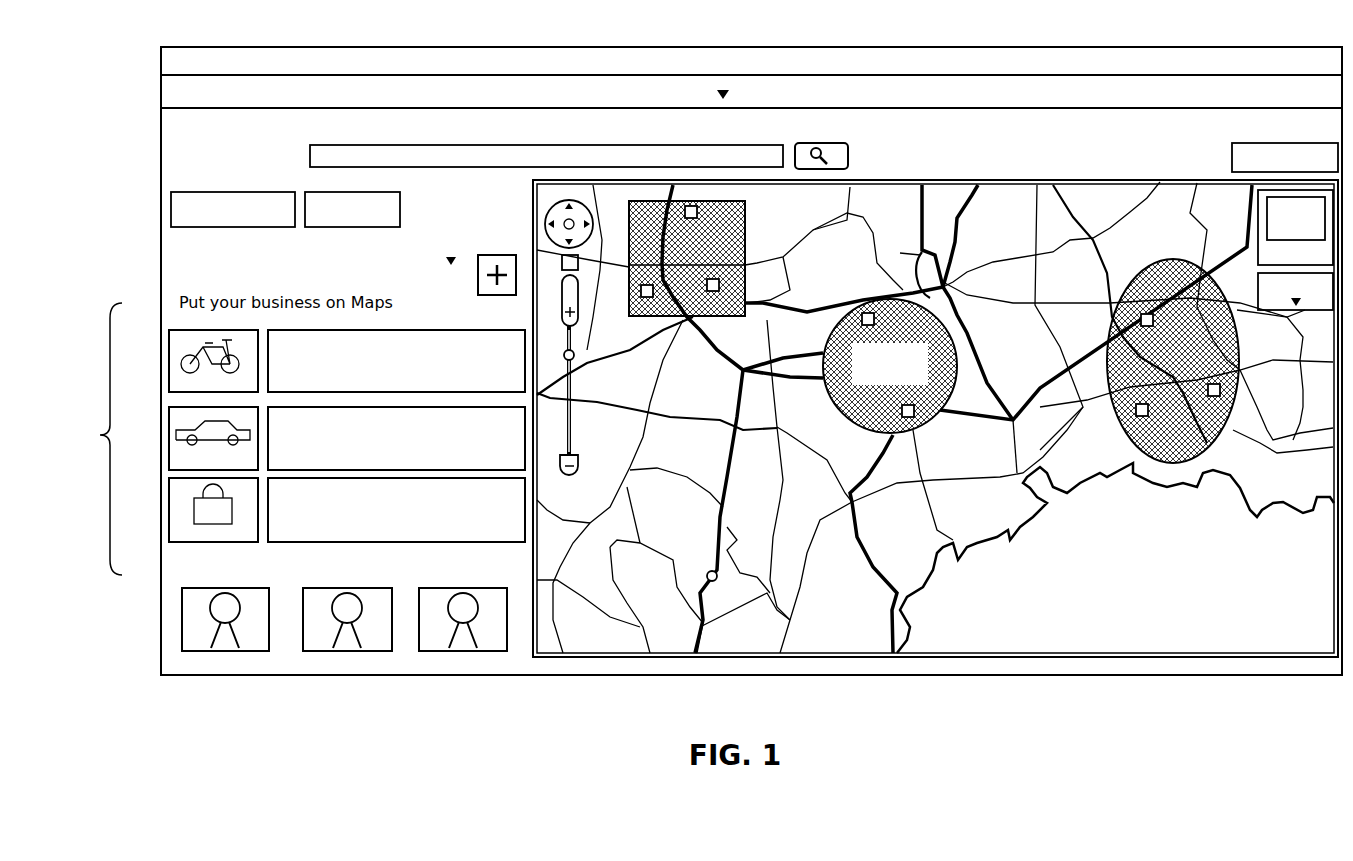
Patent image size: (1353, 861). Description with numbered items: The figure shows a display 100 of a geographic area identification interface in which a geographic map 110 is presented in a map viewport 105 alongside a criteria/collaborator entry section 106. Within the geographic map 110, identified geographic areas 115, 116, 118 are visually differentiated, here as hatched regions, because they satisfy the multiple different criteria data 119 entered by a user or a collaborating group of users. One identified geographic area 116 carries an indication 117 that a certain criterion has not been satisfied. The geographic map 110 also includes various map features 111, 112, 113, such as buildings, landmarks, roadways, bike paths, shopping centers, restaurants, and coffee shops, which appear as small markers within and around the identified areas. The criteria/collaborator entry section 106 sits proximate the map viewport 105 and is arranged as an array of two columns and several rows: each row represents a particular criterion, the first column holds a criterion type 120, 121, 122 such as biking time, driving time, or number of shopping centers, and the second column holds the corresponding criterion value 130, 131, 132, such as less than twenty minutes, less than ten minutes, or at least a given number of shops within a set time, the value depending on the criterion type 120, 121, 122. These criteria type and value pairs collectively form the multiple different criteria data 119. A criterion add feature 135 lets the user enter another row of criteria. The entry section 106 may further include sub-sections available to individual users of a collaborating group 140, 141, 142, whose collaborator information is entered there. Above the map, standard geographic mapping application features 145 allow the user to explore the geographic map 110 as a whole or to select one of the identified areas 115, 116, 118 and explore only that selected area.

The display 100 is at (1153, 33).
The map viewport 105 is at (947, 179).
The criteria/collaborator entry section 106 is at (193, 277).
The geographic map 110 is at (1060, 215).
The map feature 111 is at (1222, 390).
The map feature 112 is at (1137, 305).
The map feature 113 is at (1132, 412).
The identified geographic area 115 is at (745, 230).
The identified geographic area 116 is at (848, 412).
The indication 117 is at (960, 350).
The identified geographic area 118 is at (1168, 258).
The multiple different criteria data 119 is at (88, 439).
The criterion type 120 is at (168, 358).
The criterion type 121 is at (168, 442).
The criterion type 122 is at (168, 511).
The criterion value 130 is at (285, 330).
The criterion value 131 is at (290, 408).
The criterion value 132 is at (280, 542).
The criterion add feature 135 is at (497, 255).
The collaborator 140 is at (258, 651).
The collaborator 141 is at (380, 651).
The collaborator 142 is at (492, 651).
The standard geographic mapping application features 145 is at (317, 192).